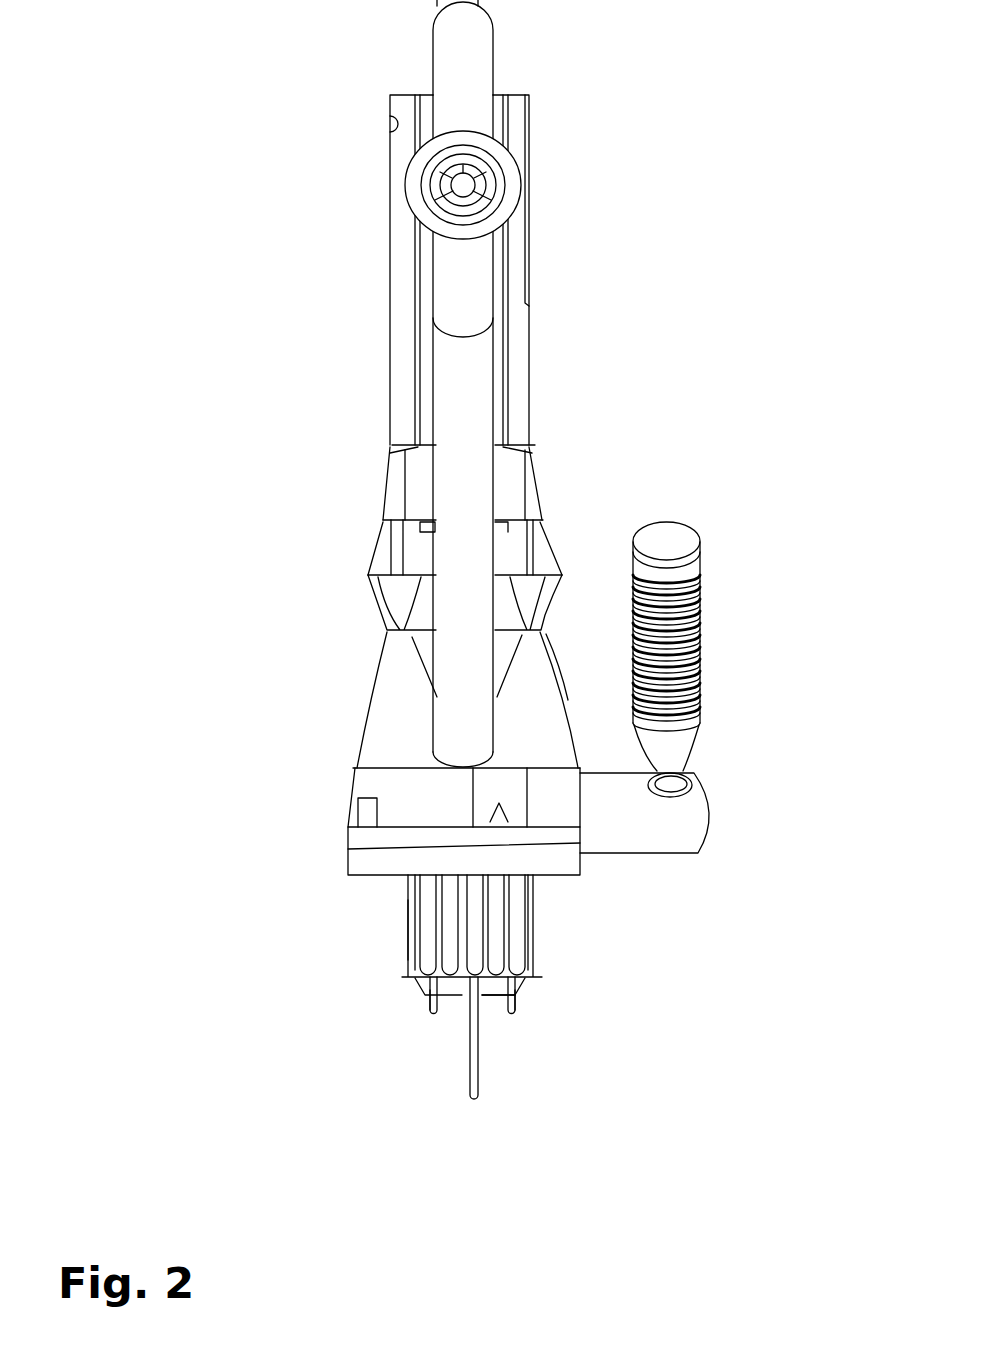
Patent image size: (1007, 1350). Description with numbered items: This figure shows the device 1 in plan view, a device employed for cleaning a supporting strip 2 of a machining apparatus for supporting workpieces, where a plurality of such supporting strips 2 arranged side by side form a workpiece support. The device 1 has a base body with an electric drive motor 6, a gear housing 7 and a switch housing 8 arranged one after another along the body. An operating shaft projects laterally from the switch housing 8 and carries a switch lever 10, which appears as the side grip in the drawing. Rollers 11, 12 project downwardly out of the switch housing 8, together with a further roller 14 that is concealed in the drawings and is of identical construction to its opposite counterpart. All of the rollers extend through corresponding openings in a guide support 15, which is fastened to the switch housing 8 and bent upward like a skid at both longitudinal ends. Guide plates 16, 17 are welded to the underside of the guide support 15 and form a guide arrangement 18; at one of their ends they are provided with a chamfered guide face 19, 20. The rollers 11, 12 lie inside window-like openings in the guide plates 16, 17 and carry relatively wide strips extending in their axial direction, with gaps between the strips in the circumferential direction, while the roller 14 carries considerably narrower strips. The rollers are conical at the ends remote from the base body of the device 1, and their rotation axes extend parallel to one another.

The device 1 is at (580, 343).
The supporting strip 2 is at (472, 1067).
The electric drive motor 6 is at (403, 375).
The gear housing 7 is at (378, 702).
The switch housing 8 is at (377, 800).
The switch lever 10 is at (705, 645).
The roller 11 is at (556, 948).
The roller 12 is at (394, 950).
The roller 14 is at (392, 907).
The guide support 15 is at (562, 862).
The guide plate 16 is at (542, 981).
The guide plate 17 is at (418, 978).
The guide arrangement 18 is at (525, 1043).
The chamfered guide face 19 is at (517, 1003).
The chamfered guide face 20 is at (430, 1010).